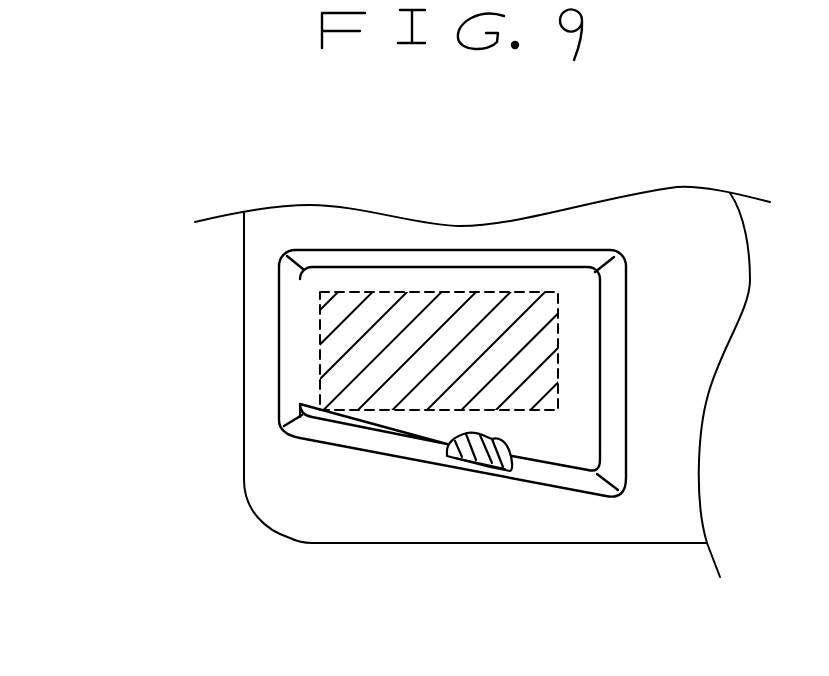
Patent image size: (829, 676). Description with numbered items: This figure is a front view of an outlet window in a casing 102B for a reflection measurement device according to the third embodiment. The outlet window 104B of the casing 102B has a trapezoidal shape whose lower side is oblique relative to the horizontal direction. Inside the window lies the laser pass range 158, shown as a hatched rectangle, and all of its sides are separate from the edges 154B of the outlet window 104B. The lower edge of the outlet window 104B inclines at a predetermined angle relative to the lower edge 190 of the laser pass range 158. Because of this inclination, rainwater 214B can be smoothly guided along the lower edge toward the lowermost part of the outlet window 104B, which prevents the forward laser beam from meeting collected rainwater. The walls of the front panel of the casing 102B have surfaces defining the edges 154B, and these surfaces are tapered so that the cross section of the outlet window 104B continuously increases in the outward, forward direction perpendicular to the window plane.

The casing 102B is at (244, 316).
The outlet window 104B is at (563, 248).
The laser pass range 158 is at (541, 347).
The edges of the outlet window 154B is at (362, 443).
The lower edge of the laser pass range 190 is at (408, 411).
The rainwater 214B is at (501, 470).